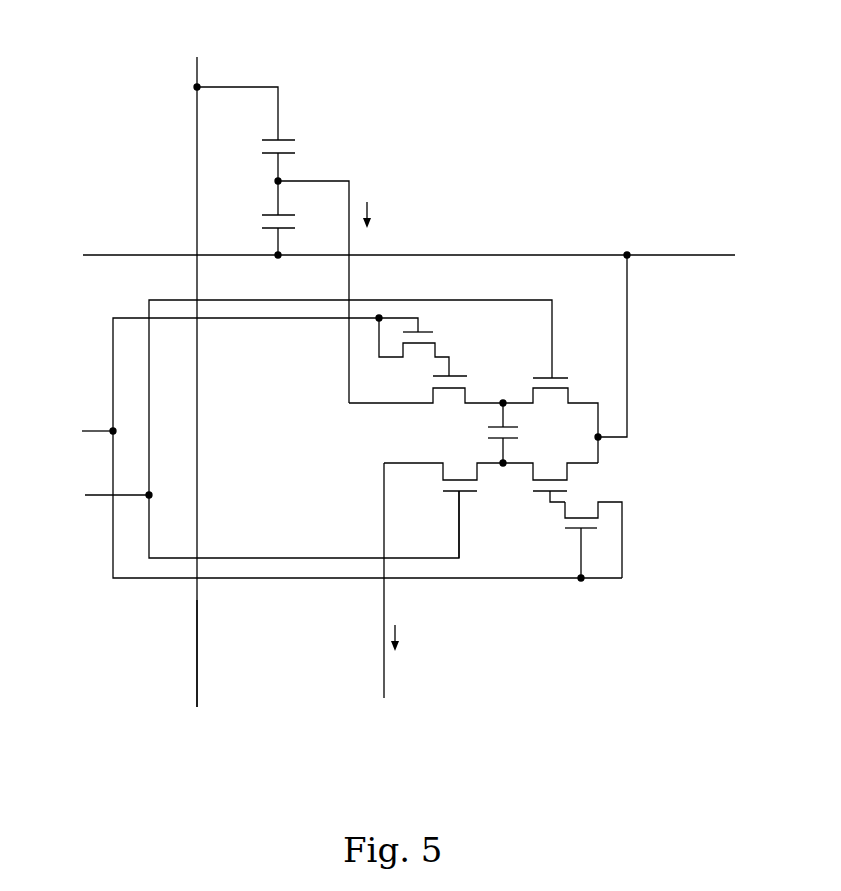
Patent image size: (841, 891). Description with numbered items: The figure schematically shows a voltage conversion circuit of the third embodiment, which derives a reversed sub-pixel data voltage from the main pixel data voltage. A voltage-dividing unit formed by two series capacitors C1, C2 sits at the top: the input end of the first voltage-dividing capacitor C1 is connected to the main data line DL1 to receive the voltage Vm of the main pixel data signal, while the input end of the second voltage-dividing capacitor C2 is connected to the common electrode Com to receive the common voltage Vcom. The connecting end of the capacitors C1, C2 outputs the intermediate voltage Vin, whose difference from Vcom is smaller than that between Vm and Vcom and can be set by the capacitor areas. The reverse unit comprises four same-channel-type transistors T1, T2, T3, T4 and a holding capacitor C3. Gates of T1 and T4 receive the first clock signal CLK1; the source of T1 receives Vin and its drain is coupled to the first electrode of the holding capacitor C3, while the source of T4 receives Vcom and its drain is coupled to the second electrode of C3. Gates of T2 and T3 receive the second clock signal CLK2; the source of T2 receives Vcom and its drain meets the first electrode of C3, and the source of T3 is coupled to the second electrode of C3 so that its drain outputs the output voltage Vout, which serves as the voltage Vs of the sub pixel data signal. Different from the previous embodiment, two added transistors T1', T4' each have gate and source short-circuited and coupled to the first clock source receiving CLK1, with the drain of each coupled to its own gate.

The main data line DL1 is at (194, 365).
The voltage of the data signal of the main pixel region Vm is at (202, 674).
The first voltage-dividing capacitor C1 is at (246, 135).
The second voltage-dividing capacitor C2 is at (262, 219).
The holding capacitor C3 is at (519, 434).
The intermediate voltage Vin is at (344, 292).
The common electrode Com is at (383, 254).
The common voltage Vcom is at (621, 327).
The first clock signal CLK1 is at (333, 446).
The second clock signal CLK2 is at (301, 429).
The transistor T1 is at (427, 390).
The transistor T1' is at (425, 347).
The transistor T2 is at (550, 417).
The transistor T3 is at (443, 510).
The transistor T4 is at (550, 485).
The transistor T4' is at (571, 541).
The voltage of the data signal of the sub pixel region Vs is at (383, 605).
The output voltage Vout is at (422, 638).